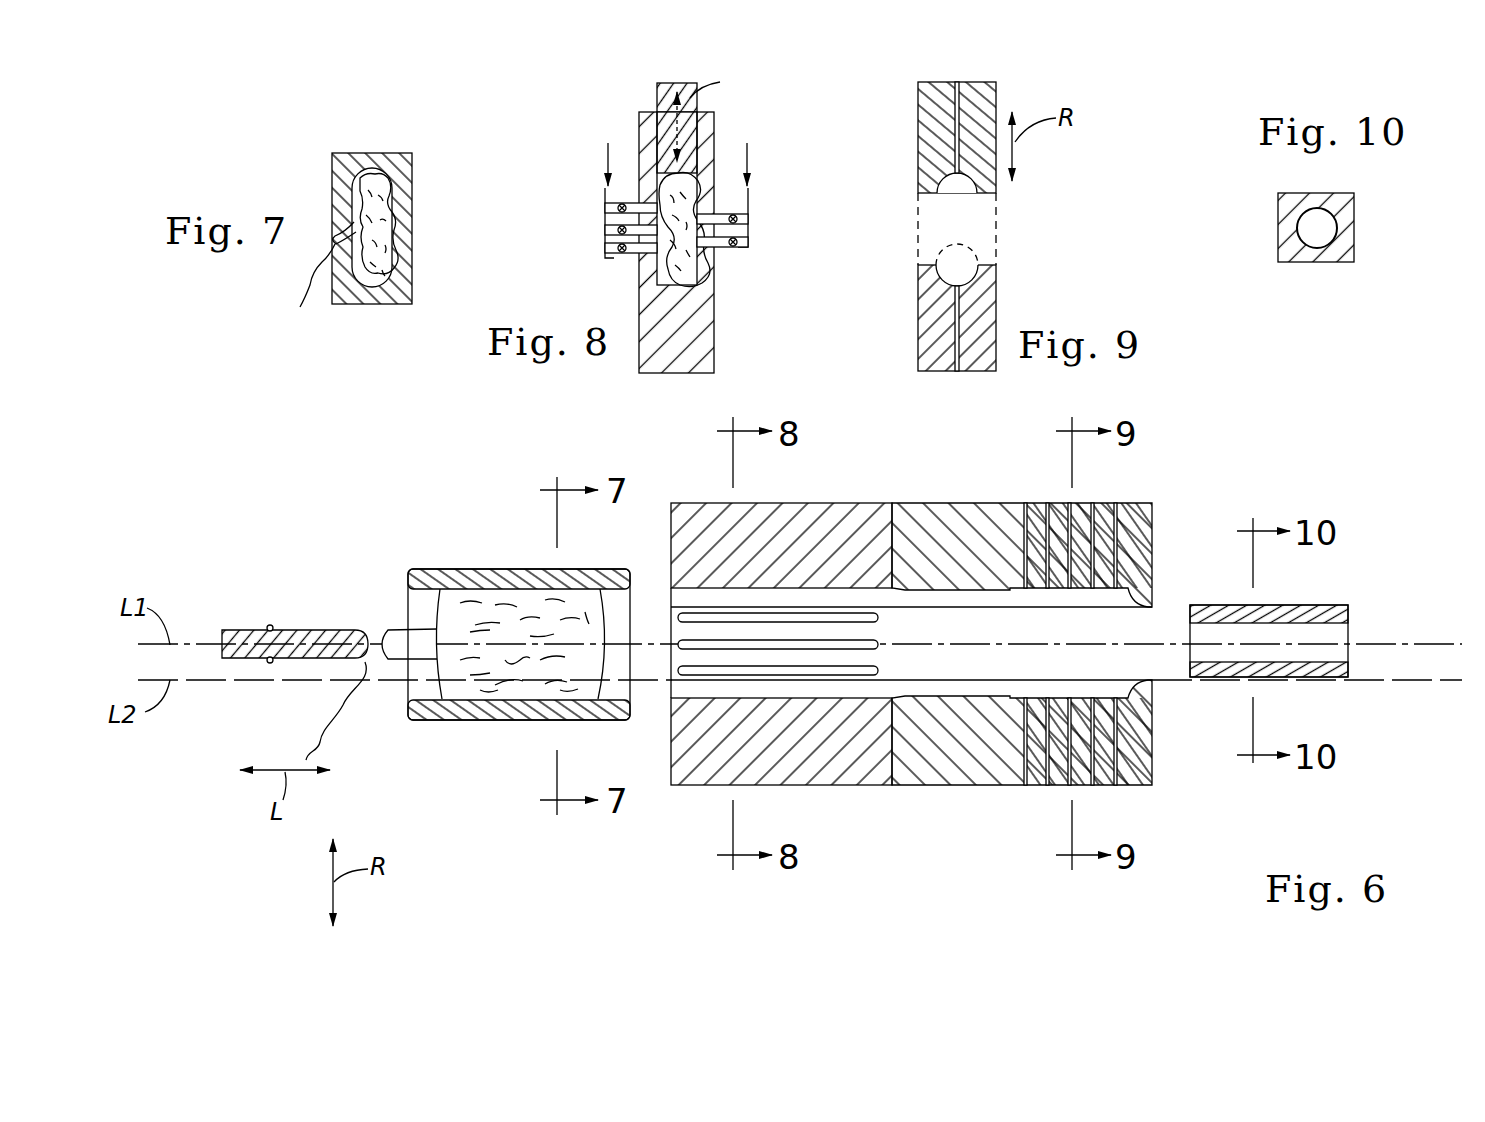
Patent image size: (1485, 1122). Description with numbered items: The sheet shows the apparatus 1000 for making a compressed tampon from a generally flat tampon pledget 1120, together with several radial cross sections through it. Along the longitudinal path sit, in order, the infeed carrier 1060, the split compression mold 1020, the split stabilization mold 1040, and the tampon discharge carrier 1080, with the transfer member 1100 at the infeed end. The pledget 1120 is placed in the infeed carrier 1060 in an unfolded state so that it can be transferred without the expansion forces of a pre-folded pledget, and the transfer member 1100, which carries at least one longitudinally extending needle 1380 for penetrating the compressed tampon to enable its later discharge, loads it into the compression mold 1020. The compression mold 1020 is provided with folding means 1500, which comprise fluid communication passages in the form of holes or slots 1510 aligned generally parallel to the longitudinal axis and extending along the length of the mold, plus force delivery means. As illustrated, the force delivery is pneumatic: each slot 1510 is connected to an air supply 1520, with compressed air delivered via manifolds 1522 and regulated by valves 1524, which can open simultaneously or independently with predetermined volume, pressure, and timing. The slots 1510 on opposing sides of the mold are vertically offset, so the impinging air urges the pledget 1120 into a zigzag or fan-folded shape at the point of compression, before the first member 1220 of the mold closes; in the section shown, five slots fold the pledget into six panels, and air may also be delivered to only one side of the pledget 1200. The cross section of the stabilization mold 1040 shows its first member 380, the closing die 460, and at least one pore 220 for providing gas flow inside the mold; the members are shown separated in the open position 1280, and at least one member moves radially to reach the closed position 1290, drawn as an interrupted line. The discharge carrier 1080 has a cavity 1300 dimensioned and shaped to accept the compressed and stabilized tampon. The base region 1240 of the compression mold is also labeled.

In FIG. 6, the apparatus 1000 is at (347, 472).
In FIG. 6, the compression mold 1020 is at (690, 764).
In FIG. 8, the compression mold 1020 is at (650, 155).
In FIG. 6, the stabilization mold 1040 is at (935, 764).
In FIG. 9, the stabilization mold 1040 is at (985, 175).
In FIG. 6, the infeed carrier 1060 is at (490, 570).
In FIG. 7, the infeed carrier 1060 is at (332, 190).
In FIG. 6, the tampon discharge carrier 1080 is at (1340, 608).
In FIG. 10, the tampon discharge carrier 1080 is at (1295, 262).
In FIG. 6, the transfer member 1100 is at (295, 630).
In FIG. 6, the tampon pledget 1120 is at (470, 690).
In FIG. 7, the tampon pledget 1120 is at (385, 265).
In FIG. 8, the tampon pledget 1120 is at (670, 280).
In FIG. 7, the tampon pledget 1200 is at (390, 173).
In FIG. 8, the first member of the compression mold 1220 is at (672, 92).
In FIG. 8, the base 1240 is at (700, 360).
In FIG. 8, the open position 1280 is at (700, 175).
In FIG. 9, the open position 1280 is at (920, 165).
In FIG. 8, the closed position 1290 is at (740, 240).
In FIG. 9, the closed position 1290 is at (968, 250).
In FIG. 10, the cavity 1300 is at (1330, 245).
In FIG. 6, the needle 1380 is at (378, 638).
In FIG. 6, the folding means 1500 is at (722, 613).
In FIG. 8, the folding means 1500 is at (600, 257).
In FIG. 6, the slots 1510 is at (812, 670).
In FIG. 8, the slots 1510 is at (708, 243).
In FIG. 8, the air supply 1520 is at (607, 148).
In FIG. 8, the manifolds 1522 is at (612, 203).
In FIG. 8, the valves 1524 is at (618, 248).
In FIG. 6, the pore 220 is at (1135, 503).
In FIG. 9, the pore 220 is at (957, 82).
In FIG. 9, the first member 380 is at (980, 350).
In FIG. 9, the closing die 460 is at (990, 100).